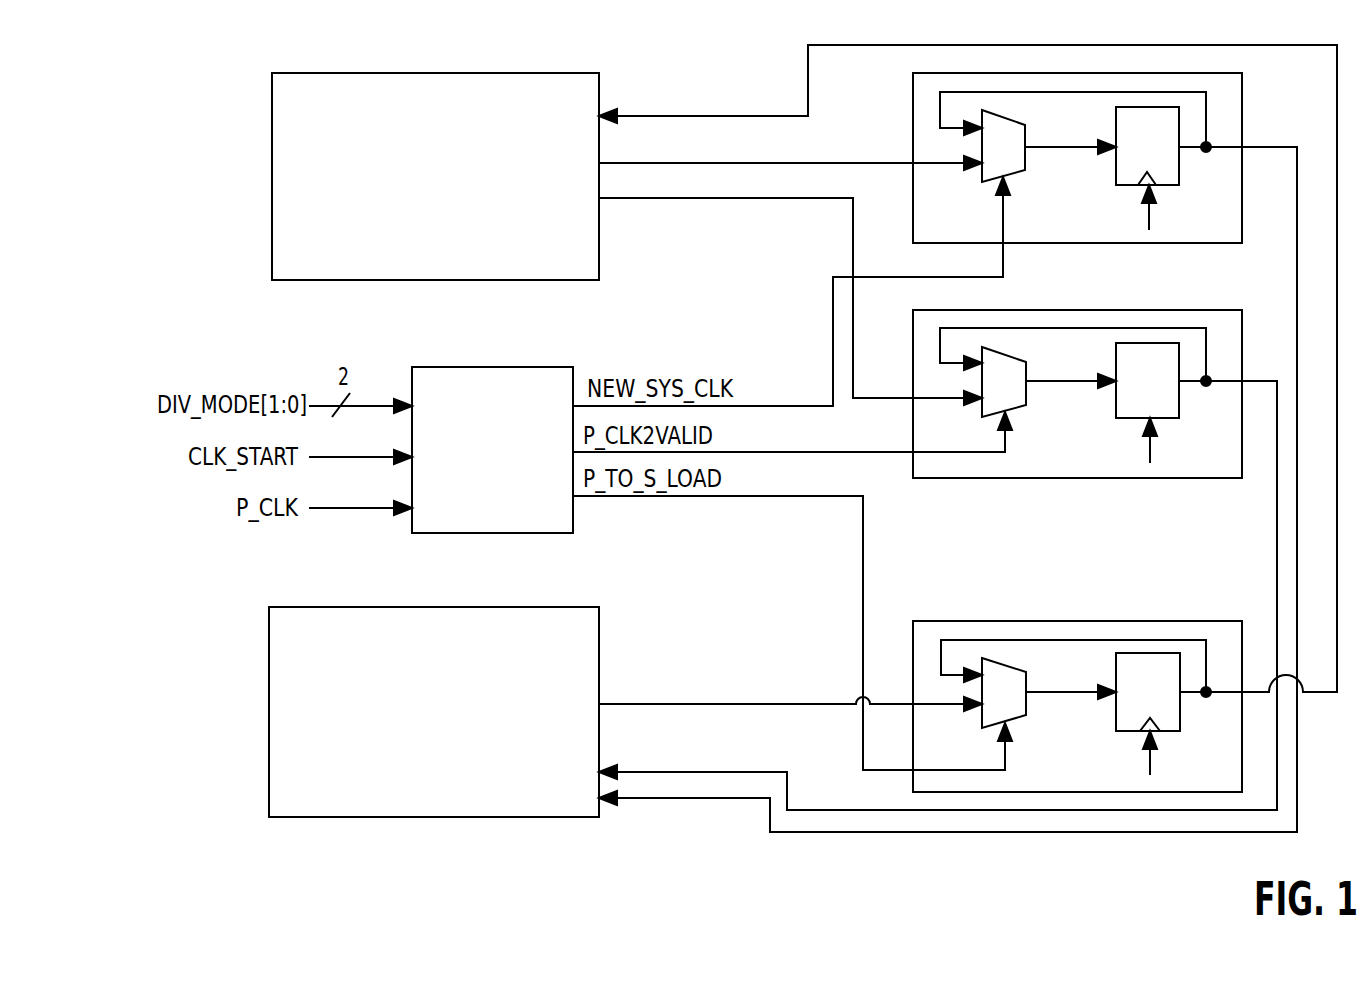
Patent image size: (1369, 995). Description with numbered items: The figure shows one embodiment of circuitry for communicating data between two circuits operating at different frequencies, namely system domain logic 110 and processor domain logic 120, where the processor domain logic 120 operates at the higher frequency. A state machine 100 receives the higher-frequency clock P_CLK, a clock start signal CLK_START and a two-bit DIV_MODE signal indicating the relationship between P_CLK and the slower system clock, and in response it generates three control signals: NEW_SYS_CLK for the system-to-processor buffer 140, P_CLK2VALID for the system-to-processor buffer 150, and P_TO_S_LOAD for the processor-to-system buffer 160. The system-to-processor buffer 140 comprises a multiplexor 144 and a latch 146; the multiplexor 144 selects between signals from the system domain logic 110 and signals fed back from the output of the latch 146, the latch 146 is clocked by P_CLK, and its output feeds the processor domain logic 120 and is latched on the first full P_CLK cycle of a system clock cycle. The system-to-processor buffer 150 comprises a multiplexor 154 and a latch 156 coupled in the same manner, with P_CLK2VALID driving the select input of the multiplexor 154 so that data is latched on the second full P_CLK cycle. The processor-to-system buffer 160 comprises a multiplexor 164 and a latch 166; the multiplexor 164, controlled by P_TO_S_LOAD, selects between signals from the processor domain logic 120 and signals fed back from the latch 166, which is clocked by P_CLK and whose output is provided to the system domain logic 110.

The state machine 100 is at (551, 521).
The system domain logic 110 is at (551, 252).
The processor domain logic 120 is at (533, 781).
The system-to-processor buffer 140 is at (1082, 234).
The multiplexor 144 is at (1018, 157).
The latch 146 is at (1163, 152).
The system-to-processor buffer 150 is at (1081, 462).
The multiplexor 154 is at (1018, 394).
The latch 156 is at (1163, 391).
The processor-to-system buffer 160 is at (1082, 777).
The multiplexor 164 is at (1018, 706).
The latch 166 is at (1163, 702).